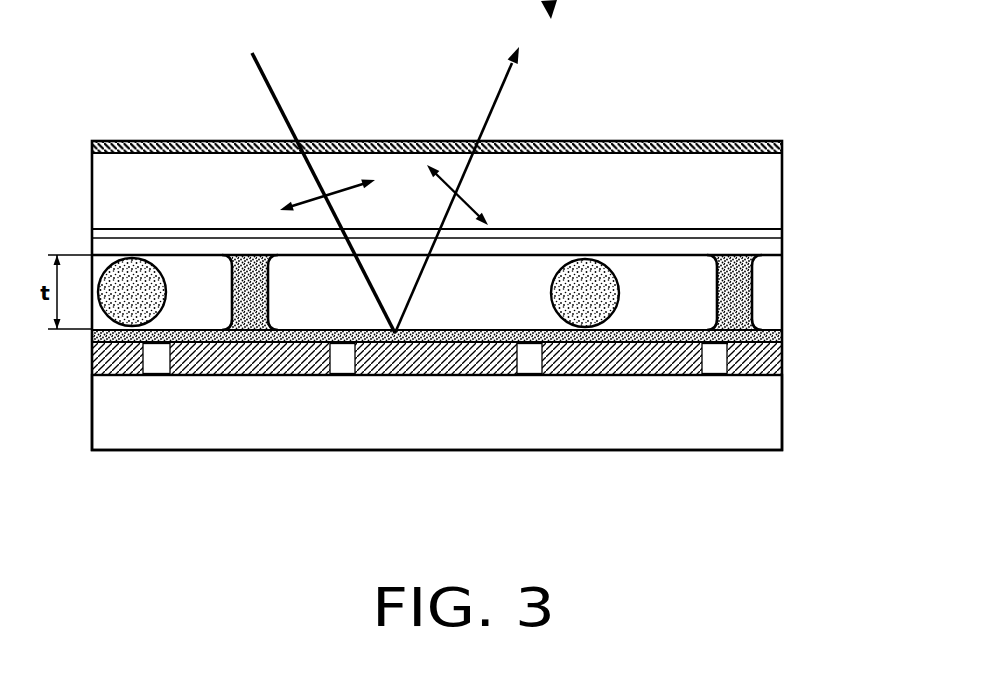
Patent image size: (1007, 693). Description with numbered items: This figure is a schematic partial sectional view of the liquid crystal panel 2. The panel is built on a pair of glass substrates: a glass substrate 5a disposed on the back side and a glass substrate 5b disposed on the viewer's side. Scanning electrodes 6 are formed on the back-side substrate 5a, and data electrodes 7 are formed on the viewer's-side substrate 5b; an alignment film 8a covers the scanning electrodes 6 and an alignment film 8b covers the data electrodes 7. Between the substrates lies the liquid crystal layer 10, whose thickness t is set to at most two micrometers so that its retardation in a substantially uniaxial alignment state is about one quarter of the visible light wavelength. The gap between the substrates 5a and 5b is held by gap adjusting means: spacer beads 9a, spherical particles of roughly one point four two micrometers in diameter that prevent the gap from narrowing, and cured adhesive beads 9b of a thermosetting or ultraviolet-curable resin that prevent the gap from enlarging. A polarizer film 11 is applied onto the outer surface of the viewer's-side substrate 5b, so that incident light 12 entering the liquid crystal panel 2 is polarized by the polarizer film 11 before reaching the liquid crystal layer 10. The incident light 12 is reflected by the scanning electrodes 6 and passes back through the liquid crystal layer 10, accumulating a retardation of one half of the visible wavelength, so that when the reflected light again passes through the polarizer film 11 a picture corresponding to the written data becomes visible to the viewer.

The liquid crystal panel 2 is at (770, 95).
The glass substrate 5a is at (770, 417).
The glass substrate 5b is at (770, 192).
The scanning electrodes 6 is at (783, 360).
The data electrodes 7 is at (778, 237).
The alignment film 8a is at (783, 333).
The alignment film 8b is at (778, 247).
The spacer beads 9a is at (164, 291).
The cured adhesive beads 9b is at (264, 295).
The liquid crystal layer 10 is at (770, 297).
The polarizer film 11 is at (783, 146).
The incident light 12 is at (283, 110).